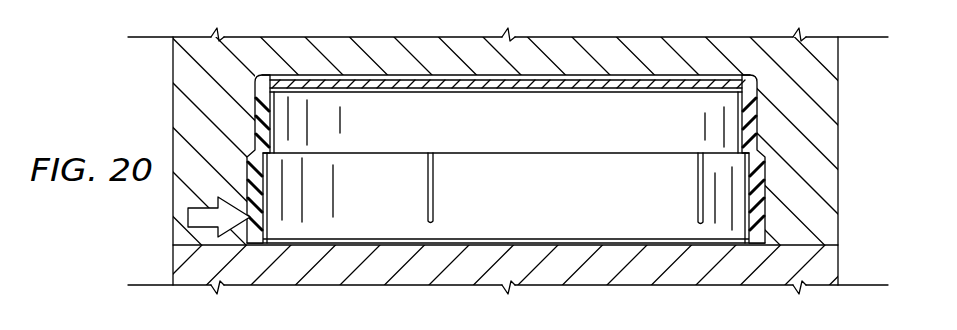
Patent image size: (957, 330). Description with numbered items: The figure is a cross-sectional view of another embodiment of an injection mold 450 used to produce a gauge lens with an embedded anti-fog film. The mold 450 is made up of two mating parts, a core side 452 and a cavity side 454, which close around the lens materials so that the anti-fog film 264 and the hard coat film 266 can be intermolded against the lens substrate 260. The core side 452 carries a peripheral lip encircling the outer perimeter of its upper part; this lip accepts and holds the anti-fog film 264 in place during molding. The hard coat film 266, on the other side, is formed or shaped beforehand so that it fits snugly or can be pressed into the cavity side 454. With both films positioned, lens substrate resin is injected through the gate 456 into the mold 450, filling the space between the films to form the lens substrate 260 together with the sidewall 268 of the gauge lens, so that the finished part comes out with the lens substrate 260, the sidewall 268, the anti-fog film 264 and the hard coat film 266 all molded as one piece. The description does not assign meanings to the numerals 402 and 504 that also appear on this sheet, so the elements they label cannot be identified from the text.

The injection mold 450 is at (129, 93).
The core side 452 is at (326, 279).
The cavity side 454 is at (468, 47).
The gate 456 is at (197, 236).
The housing 402 is at (508, 20).
The lens substrate 260 is at (583, 84).
The anti-fog film 264 is at (633, 95).
The hard coat film 266 is at (688, 73).
The sidewall 268 is at (760, 188).
The base plate 504 is at (506, 284).